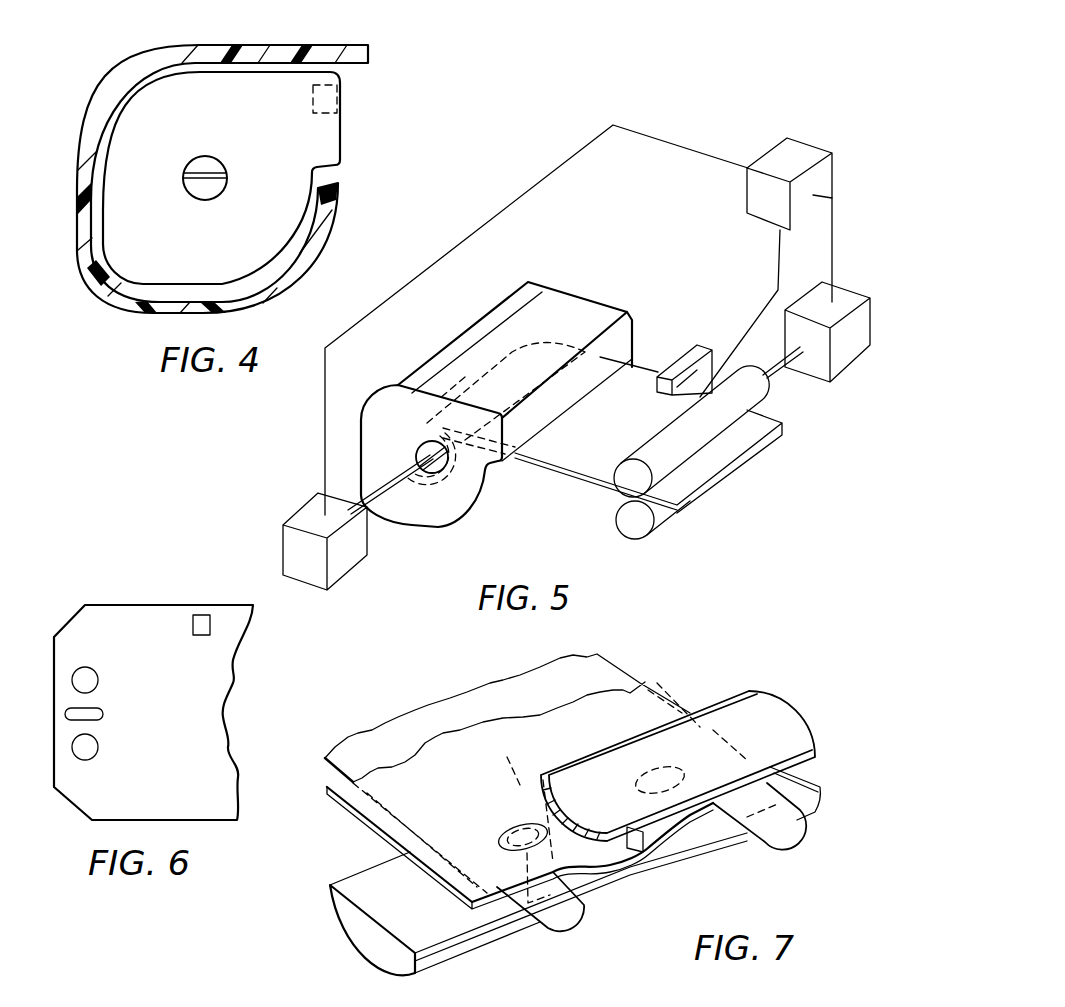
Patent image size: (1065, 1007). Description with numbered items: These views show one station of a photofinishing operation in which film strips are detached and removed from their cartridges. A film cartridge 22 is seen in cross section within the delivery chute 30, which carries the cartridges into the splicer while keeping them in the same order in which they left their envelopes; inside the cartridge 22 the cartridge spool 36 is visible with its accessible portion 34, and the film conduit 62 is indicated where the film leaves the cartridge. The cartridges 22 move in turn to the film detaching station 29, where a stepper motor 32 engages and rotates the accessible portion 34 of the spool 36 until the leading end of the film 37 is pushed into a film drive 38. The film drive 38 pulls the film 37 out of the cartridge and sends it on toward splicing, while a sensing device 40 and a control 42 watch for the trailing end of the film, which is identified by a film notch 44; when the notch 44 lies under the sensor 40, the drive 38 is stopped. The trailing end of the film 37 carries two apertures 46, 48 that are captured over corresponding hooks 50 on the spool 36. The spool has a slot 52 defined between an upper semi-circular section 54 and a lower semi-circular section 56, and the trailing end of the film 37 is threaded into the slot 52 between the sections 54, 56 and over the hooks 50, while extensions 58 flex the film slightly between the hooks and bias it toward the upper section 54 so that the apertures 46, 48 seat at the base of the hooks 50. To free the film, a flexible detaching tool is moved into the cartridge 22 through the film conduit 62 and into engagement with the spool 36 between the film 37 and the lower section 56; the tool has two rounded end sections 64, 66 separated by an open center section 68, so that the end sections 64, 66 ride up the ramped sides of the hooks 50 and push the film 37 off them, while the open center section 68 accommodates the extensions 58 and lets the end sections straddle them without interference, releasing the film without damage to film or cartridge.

In FIG. 4, the film cartridge 22 is at (228, 125).
In FIG. 5, the film cartridge 22 is at (545, 292).
In FIG. 5, the film detaching station 29 is at (290, 470).
In FIG. 4, the delivery chute 30 is at (258, 50).
In FIG. 5, the stepper motor 32 is at (348, 565).
In FIG. 4, the accessible portion of the cartridge spool 34 is at (212, 192).
In FIG. 5, the accessible portion of the cartridge spool 34 is at (432, 490).
In FIG. 5, the cartridge spool 36 is at (405, 440).
In FIG. 7, the cartridge spool 36 is at (352, 940).
In FIG. 5, the film 37 is at (557, 458).
In FIG. 6, the film 37 is at (215, 727).
In FIG. 7, the film 37 is at (370, 807).
In FIG. 5, the film drive 38 is at (645, 530).
In FIG. 5, the sensing device 40 is at (690, 350).
In FIG. 5, the control 42 is at (800, 152).
In FIG. 6, the film notch 44 is at (200, 617).
In FIG. 6, the aperture 46 is at (72, 750).
In FIG. 7, the aperture 46 is at (680, 765).
In FIG. 6, the aperture 48 is at (72, 680).
In FIG. 7, the aperture 48 is at (510, 825).
In FIG. 7, the hooks 50 is at (492, 843).
In FIG. 7, the slot 52 is at (455, 920).
In FIG. 7, the upper semi-circular section 54 is at (773, 713).
In FIG. 7, the lower semi-circular section 56 is at (800, 778).
In FIG. 7, the extensions 58 is at (648, 852).
In FIG. 4, the film conduit 62 is at (338, 107).
In FIG. 5, the film conduit 62 is at (633, 347).
In FIG. 7, the rounded end section 64 is at (575, 920).
In FIG. 7, the rounded end section 66 is at (785, 830).
In FIG. 7, the open center section 68 is at (507, 757).